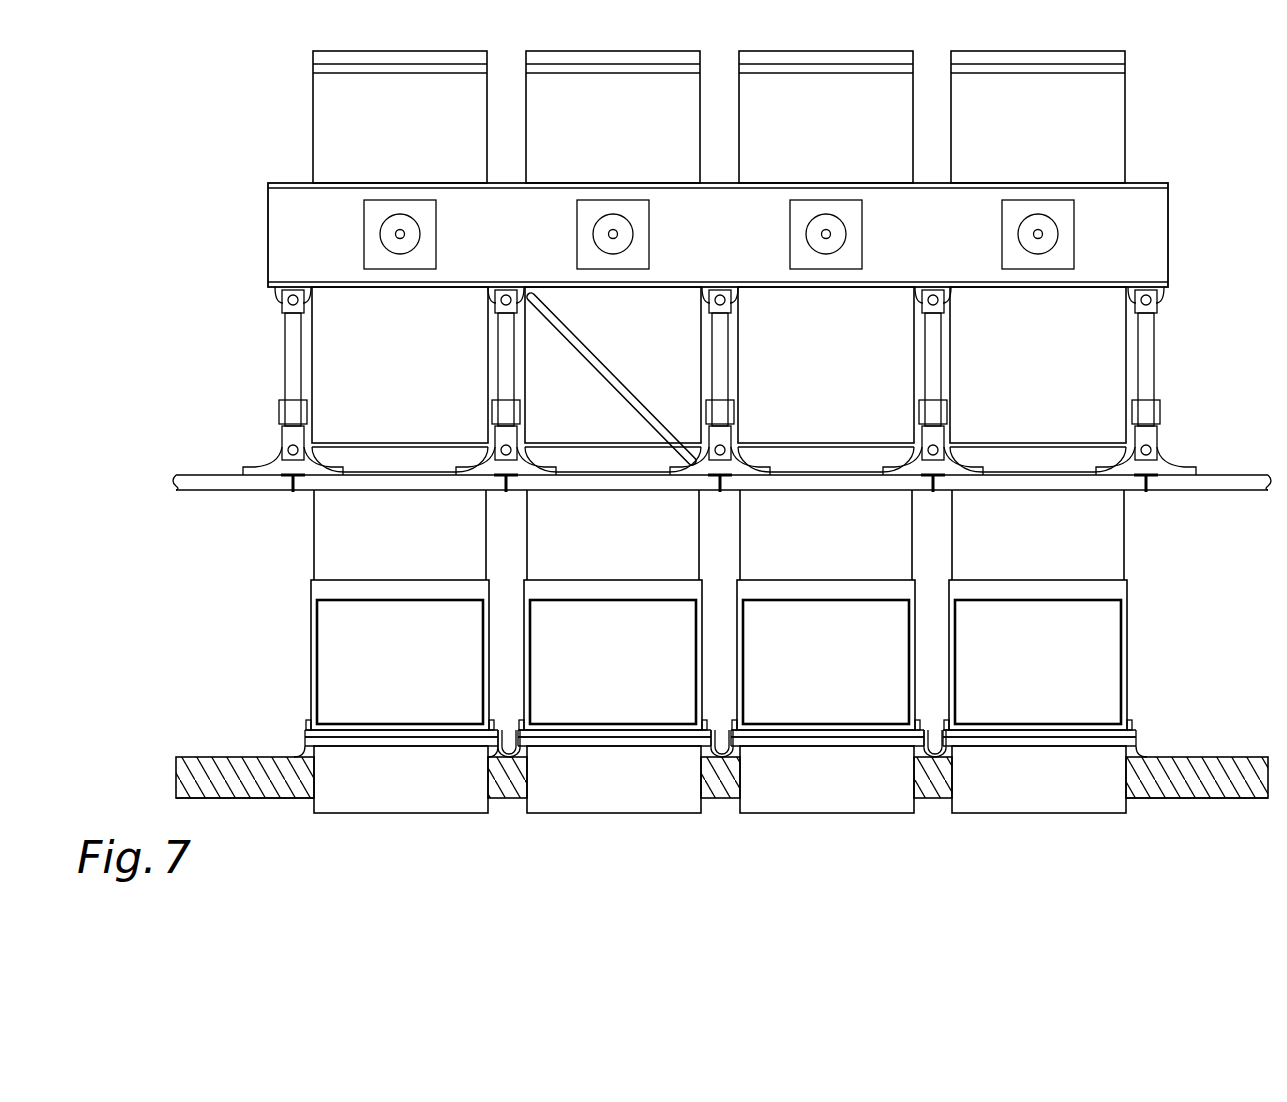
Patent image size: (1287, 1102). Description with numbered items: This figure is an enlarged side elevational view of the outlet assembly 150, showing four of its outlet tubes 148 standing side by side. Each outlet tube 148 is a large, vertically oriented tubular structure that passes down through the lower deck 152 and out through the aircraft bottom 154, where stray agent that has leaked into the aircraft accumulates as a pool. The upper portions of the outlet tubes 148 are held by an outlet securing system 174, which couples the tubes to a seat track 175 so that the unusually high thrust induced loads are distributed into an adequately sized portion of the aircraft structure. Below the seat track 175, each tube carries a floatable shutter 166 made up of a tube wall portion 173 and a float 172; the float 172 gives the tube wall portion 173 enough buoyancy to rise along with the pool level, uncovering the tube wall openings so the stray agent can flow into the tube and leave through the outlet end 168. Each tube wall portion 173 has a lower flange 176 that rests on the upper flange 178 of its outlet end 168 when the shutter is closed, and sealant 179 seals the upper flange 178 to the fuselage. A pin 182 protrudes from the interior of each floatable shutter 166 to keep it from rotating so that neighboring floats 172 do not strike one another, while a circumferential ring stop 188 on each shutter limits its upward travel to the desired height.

The outlet tube 148 is at (327, 124).
The outlet assembly 150 is at (158, 102).
The lower deck 152 is at (190, 756).
The aircraft bottom 154 is at (240, 800).
The floatable shutter 166 is at (312, 590).
The outlet end 168 is at (408, 815).
The float 172 is at (335, 634).
The tube wall portion 173 is at (325, 535).
The outlet securing system 174 is at (241, 401).
The seat track 175 is at (200, 473).
The lower flange 176 is at (306, 733).
The upper flange 178 is at (300, 746).
The sealant 179 is at (306, 760).
The pin 182 is at (308, 721).
The circumferential ring stop 188 is at (404, 440).